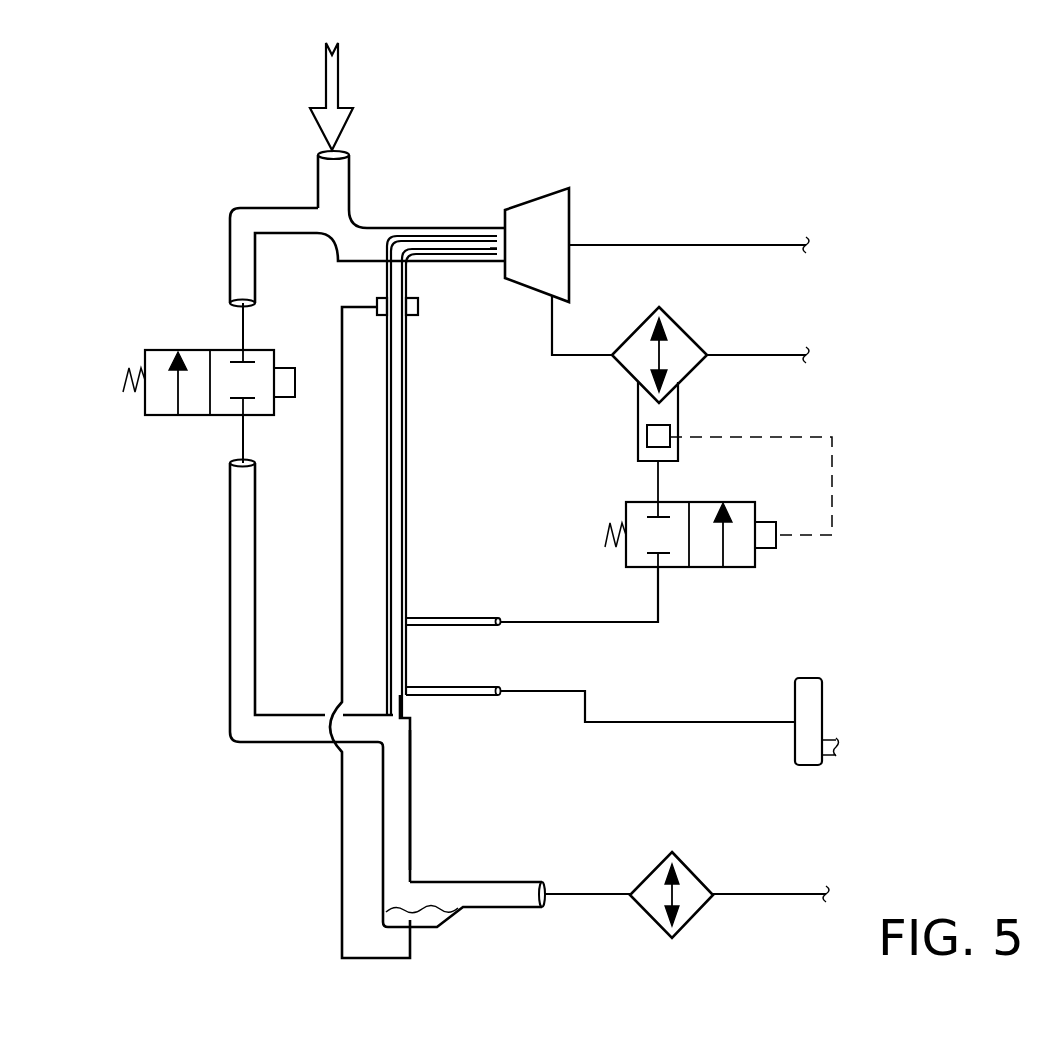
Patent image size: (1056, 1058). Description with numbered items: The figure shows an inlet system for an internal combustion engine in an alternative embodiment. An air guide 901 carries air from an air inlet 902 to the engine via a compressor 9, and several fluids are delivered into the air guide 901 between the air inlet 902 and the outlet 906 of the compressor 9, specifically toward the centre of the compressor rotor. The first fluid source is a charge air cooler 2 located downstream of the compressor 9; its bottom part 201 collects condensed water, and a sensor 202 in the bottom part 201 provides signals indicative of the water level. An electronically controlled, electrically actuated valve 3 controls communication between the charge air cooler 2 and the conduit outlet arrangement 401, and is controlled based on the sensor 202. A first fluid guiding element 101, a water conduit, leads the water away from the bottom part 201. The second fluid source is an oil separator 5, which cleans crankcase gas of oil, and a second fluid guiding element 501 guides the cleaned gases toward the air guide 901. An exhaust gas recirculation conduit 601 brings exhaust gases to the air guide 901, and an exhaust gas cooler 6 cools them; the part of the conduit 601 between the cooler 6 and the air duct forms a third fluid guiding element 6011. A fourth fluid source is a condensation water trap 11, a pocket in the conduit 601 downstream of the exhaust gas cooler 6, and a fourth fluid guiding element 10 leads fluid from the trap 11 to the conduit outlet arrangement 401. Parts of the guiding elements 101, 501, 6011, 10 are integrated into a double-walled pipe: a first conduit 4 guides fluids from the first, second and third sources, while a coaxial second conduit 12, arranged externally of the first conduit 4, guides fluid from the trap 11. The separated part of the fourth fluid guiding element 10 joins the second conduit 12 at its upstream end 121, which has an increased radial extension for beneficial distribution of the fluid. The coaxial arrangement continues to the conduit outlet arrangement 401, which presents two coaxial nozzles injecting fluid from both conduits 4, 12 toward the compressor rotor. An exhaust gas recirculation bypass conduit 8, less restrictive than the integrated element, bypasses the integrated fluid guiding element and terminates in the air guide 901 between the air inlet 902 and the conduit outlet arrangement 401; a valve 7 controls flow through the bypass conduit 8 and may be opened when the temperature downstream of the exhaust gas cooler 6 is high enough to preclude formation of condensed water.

The air inlet 902 is at (326, 152).
The exhaust gas recirculation bypass conduit 8 is at (228, 246).
The valve 7 is at (145, 355).
The air guide 901 is at (426, 228).
The second conduit 12 is at (483, 237).
The first conduit 4 is at (405, 398).
The conduit outlet arrangement 401 is at (497, 250).
The upstream end of the second conduit 121 is at (377, 303).
The compressor 9 is at (535, 202).
The outlet of the compressor 906 is at (550, 300).
The charge air cooler 2 is at (688, 332).
The bottom part 201 is at (638, 412).
The sensor 202 is at (647, 437).
The valve 3 is at (626, 508).
The first fluid guiding element 101 is at (567, 622).
The second fluid guiding element 501 is at (707, 723).
The oil separator 5 is at (793, 703).
The fourth fluid guiding element 10 is at (342, 835).
The third fluid guiding element 6011 is at (412, 762).
The condensation water trap 11 is at (392, 918).
The exhaust gas cooler 6 is at (650, 872).
The exhaust gas recirculation conduit 601 is at (808, 893).